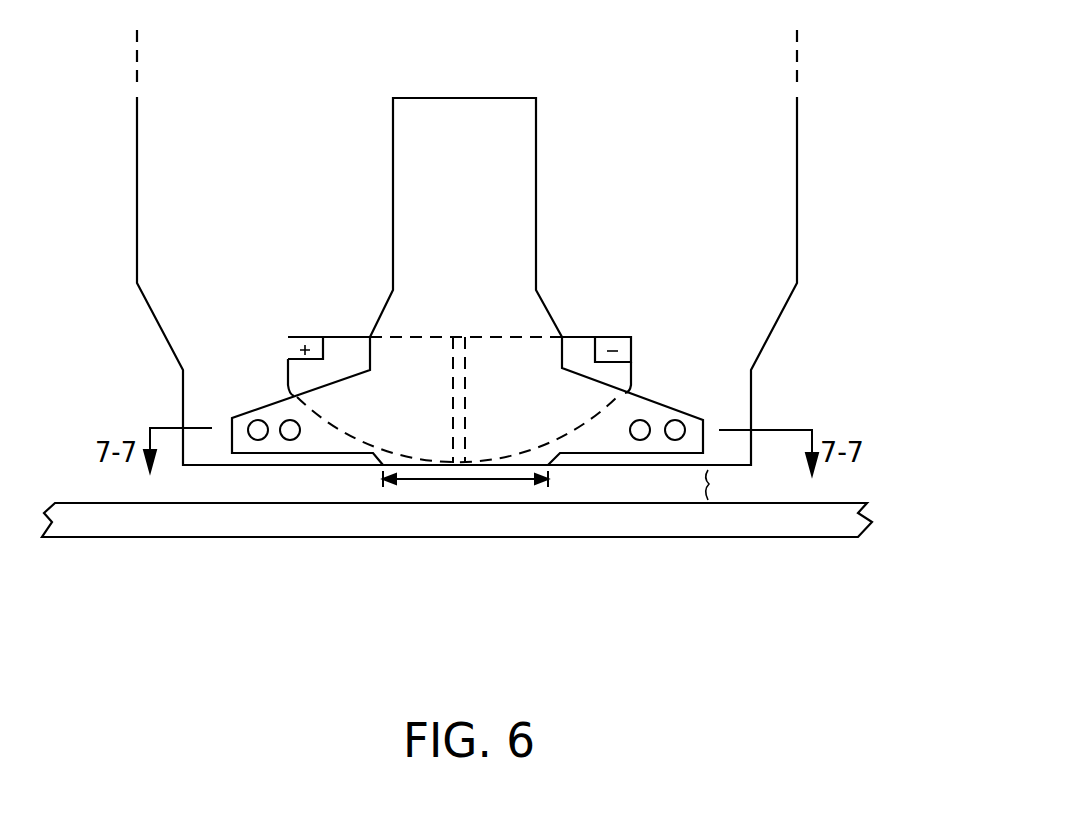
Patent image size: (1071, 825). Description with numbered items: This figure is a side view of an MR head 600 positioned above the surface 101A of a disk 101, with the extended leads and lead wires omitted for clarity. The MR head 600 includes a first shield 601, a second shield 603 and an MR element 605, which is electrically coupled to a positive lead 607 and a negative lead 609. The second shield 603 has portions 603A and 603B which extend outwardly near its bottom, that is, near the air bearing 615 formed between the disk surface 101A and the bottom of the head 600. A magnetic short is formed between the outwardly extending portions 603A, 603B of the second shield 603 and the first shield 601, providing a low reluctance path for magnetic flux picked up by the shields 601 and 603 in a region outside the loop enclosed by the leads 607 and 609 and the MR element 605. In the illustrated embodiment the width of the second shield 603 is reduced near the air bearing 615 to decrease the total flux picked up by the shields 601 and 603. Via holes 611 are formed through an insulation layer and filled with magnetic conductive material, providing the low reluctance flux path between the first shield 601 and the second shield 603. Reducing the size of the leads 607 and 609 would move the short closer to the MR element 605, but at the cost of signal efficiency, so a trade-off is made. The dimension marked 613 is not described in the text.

The MR head 600 is at (508, 267).
The first shield 601 is at (789, 190).
The second shield 603 is at (528, 218).
The outwardly extending portion of second shield 603A is at (638, 393).
The outwardly extending portion of second shield 603B is at (291, 393).
The MR element 605 is at (460, 463).
The positive lead 607 is at (297, 368).
The negative lead 609 is at (618, 373).
The via holes 611 is at (258, 440).
The treatment width 613 is at (468, 481).
The air bearing 615 is at (710, 487).
The disk 101 is at (833, 538).
The surface of disk 101A is at (98, 502).